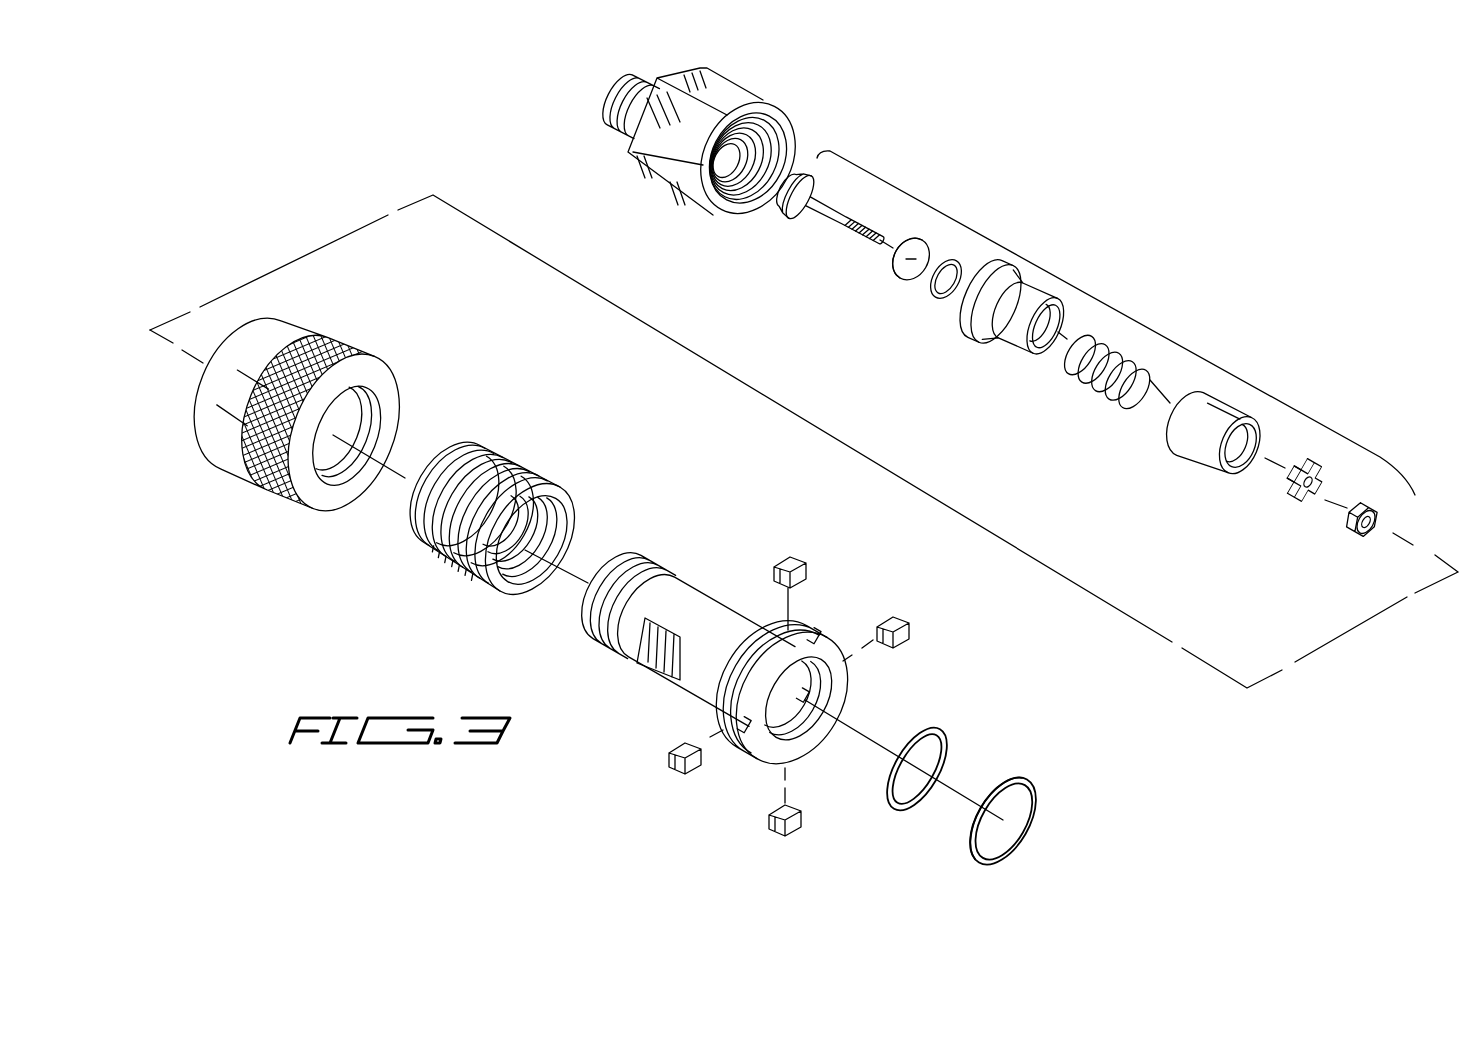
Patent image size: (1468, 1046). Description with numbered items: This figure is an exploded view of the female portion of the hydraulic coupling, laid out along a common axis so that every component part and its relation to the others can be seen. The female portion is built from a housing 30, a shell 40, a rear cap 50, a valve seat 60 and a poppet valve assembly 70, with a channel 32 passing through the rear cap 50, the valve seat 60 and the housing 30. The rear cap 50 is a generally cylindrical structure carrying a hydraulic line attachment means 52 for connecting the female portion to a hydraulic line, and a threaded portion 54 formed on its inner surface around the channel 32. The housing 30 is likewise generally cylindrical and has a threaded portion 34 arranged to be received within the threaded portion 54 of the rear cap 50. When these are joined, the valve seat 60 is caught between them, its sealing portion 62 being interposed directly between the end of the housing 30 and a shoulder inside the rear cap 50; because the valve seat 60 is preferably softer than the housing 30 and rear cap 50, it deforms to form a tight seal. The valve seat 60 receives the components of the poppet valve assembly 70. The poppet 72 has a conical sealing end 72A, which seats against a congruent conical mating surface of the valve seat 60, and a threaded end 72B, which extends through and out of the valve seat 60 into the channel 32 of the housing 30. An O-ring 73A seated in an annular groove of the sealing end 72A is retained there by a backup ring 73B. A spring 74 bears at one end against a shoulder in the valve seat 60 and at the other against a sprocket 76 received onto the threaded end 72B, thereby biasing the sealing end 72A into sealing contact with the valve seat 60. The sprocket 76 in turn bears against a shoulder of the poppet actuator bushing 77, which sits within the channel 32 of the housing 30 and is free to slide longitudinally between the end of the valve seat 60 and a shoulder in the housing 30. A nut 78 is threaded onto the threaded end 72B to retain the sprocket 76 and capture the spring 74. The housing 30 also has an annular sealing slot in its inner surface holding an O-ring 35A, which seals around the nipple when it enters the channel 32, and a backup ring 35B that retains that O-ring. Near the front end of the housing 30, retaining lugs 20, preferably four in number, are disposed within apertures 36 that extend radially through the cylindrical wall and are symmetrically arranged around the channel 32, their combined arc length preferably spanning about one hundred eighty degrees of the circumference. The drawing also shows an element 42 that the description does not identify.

The retaining lugs 20 is at (812, 538).
The housing 30 is at (747, 553).
The channel 32 is at (606, 88).
The threaded portion 34 is at (636, 552).
The O-ring 35A is at (895, 808).
The backup ring 35B is at (1017, 780).
The apertures 36 is at (805, 698).
The shell 40 is at (237, 467).
The spring insert 42 is at (487, 467).
The rear cap 50 is at (768, 91).
The hydraulic line attachment means 52 is at (613, 130).
The threaded portion 54 is at (747, 203).
The valve seat 60 is at (1002, 357).
The sealing portion 62 is at (970, 340).
The poppet valve assembly 70 is at (1098, 288).
The poppet 72 is at (824, 222).
The conical sealing end 72A is at (803, 213).
The threaded end 72B is at (897, 197).
The O-ring 73A is at (942, 298).
The backup ring 73B is at (892, 270).
The spring 74 is at (1093, 393).
The sprocket 76 is at (1283, 497).
The poppet actuator bushing 77 is at (1197, 453).
The nut 78 is at (1353, 540).